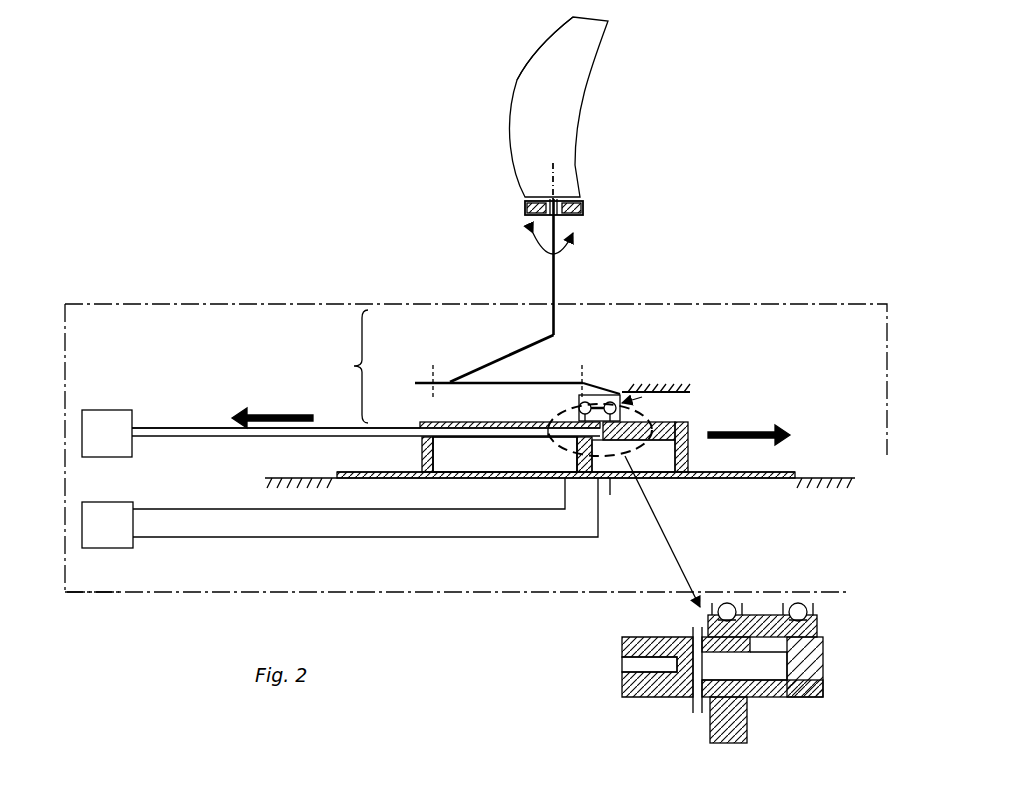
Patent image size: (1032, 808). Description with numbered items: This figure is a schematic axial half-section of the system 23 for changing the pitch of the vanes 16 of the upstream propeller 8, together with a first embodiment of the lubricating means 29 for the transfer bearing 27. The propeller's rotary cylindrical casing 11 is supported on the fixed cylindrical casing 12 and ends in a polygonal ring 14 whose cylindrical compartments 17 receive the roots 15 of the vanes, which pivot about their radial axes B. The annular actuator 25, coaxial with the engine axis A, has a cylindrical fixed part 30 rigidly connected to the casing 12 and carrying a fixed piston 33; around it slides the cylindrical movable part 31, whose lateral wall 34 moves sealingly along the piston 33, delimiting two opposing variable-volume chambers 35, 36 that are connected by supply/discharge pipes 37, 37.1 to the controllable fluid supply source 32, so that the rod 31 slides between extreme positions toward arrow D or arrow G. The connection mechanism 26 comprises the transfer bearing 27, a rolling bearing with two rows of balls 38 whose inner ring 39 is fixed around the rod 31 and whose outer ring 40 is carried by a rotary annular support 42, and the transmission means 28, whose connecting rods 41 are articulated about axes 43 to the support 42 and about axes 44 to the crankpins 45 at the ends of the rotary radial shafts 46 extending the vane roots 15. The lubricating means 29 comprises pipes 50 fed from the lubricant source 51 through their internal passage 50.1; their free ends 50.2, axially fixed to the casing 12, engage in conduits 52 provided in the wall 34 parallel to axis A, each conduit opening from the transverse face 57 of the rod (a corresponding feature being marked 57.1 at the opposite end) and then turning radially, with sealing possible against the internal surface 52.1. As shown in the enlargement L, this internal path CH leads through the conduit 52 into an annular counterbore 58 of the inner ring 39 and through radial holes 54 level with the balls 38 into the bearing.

The upstream propeller 8 is at (602, 60).
The vanes 16 is at (535, 92).
The roots 15 is at (548, 198).
The polygonal ring 14 is at (525, 210).
The cylindrical compartments 17 is at (532, 231).
The rotary radial shafts 46 is at (556, 280).
The system for orienting the pitch of the vanes 23 is at (778, 303).
The transmission means 28 is at (478, 370).
The crankpins 45 is at (502, 355).
The articulation axes 44 is at (432, 370).
The articulation axes 43 is at (583, 365).
The outer ring 40 is at (575, 384).
The connecting rods 41 is at (495, 385).
The connection mechanism 26 is at (345, 366).
The rotary annular support 42 is at (600, 395).
The inner ring 39 is at (572, 416).
The transfer bearing 27 is at (645, 397).
The rotary cylindrical casing 11 is at (690, 391).
The lateral wall 34 is at (655, 425).
The pipes 50 is at (217, 427).
The internal passage 50.1 is at (262, 437).
The free ends 50.2 is at (683, 670).
The lubricating means 29 is at (180, 425).
The lubricant supply source 51 is at (107, 433).
The controllable fluid supply source 32 is at (107, 525).
The supply/discharge pipe 37 is at (290, 510).
The supply/discharge pipe 37.1 is at (366, 538).
The movable part 31 is at (435, 422).
The transverse face 57 is at (422, 456).
The variable-volume chamber 35 is at (505, 454).
The conduits 52 is at (550, 440).
The internal surface 52.1 is at (700, 690).
The variable-volume chamber 36 is at (633, 456).
The carriage wall 57.1 is at (690, 452).
The actuator 25 is at (795, 455).
The cylindrical fixed part 30 is at (352, 472).
The fixed cylindrical casing 12 is at (265, 477).
The piston 33 is at (610, 495).
The balls 38 is at (800, 605).
The holes 54 is at (708, 618).
The annular counterbore 58 is at (760, 620).
The longitudinal axis A is at (103, 592).
The radial pivot axes B is at (556, 170).
The arrow G is at (272, 410).
The arrow D is at (749, 426).
The enlargement L is at (665, 565).
The internal path CH is at (770, 658).